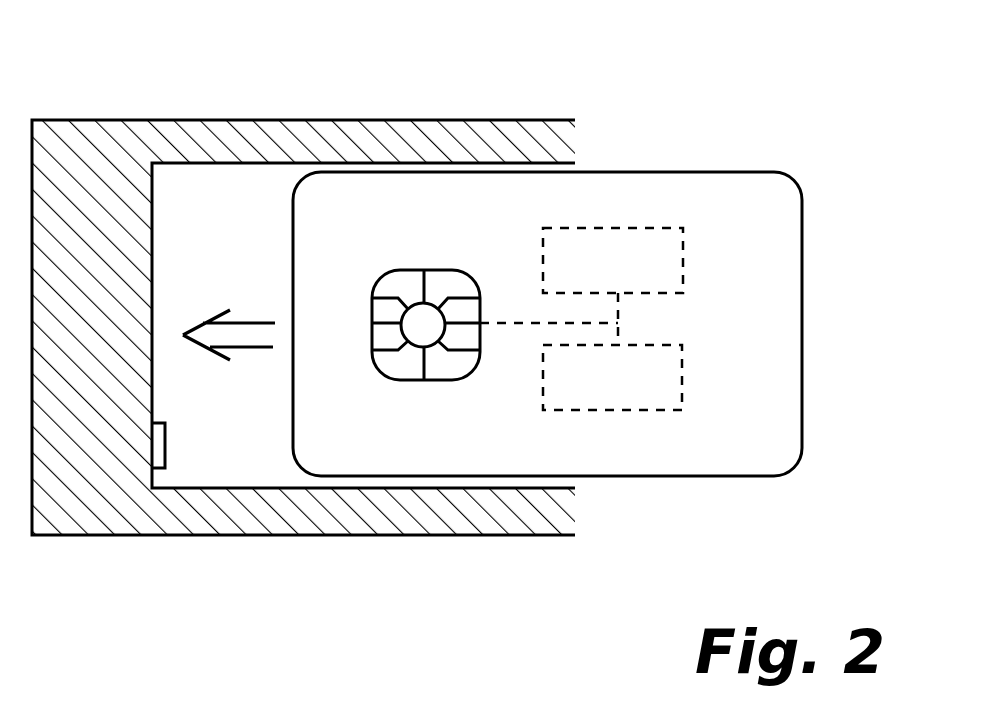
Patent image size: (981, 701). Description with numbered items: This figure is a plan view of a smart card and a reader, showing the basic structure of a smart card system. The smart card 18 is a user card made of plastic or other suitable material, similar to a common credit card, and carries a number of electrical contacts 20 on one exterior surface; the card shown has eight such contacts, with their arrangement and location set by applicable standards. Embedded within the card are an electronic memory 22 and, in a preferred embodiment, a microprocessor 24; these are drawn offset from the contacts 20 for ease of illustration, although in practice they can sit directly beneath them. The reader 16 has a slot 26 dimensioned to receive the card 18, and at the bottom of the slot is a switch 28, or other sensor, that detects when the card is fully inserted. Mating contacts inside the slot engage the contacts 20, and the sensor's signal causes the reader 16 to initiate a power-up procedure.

The reader 16 is at (210, 133).
The slot 26 is at (273, 183).
The smart card 18 is at (773, 265).
The electrical contacts 20 is at (408, 270).
The electronic memory 22 is at (612, 233).
The microprocessor 24 is at (602, 410).
The switch 28 is at (165, 452).